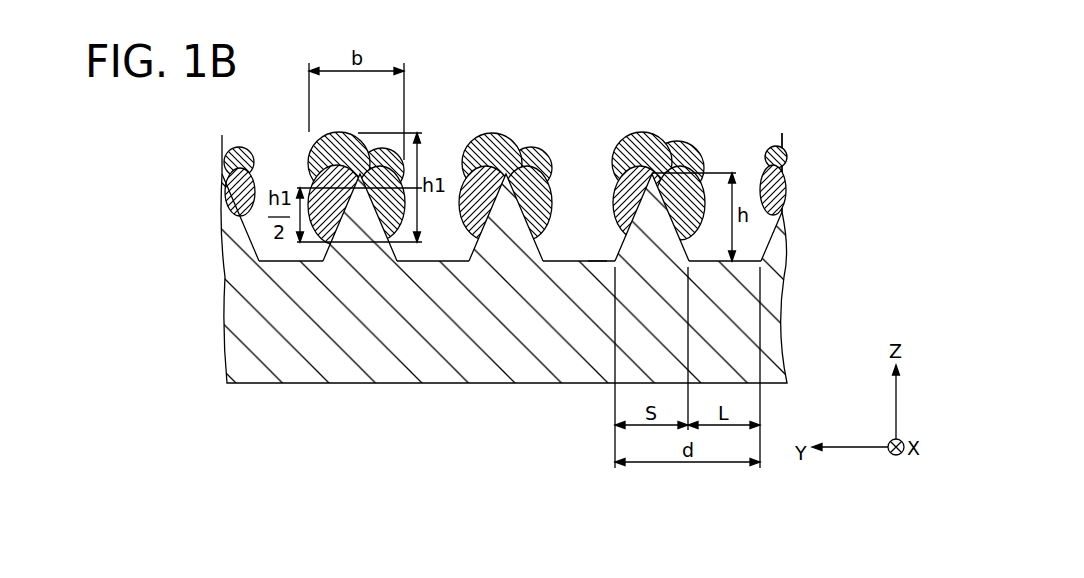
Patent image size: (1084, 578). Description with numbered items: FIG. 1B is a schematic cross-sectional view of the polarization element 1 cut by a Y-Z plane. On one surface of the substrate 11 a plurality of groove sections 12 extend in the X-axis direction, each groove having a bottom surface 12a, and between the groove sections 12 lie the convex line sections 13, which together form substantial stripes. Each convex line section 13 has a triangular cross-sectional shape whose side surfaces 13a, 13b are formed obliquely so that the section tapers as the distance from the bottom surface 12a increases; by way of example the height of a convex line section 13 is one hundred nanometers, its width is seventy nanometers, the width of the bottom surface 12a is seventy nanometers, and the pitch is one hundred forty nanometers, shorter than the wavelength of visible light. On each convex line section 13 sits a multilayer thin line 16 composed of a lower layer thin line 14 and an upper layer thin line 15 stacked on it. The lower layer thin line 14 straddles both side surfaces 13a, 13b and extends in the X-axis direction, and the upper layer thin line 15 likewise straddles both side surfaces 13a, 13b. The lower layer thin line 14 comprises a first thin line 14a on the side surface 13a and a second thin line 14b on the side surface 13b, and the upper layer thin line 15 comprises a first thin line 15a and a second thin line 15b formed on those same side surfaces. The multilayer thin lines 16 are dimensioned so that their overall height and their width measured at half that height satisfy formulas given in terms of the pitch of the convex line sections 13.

The optical sheet 1 is at (779, 118).
The substrate 11 is at (776, 339).
The groove section 12 is at (578, 250).
The bottom surface 12a is at (588, 261).
The convex line section 13 is at (363, 250).
The side surface 13a is at (380, 247).
The side surface 13b is at (328, 246).
The lower layer thin line 14 is at (507, 153).
The first thin line 14a is at (547, 157).
The second thin line 14b is at (491, 141).
The upper layer thin line 15 is at (663, 153).
The first thin line 15a is at (700, 150).
The second thin line 15b is at (642, 140).
The multilayer thin line 16 is at (294, 170).